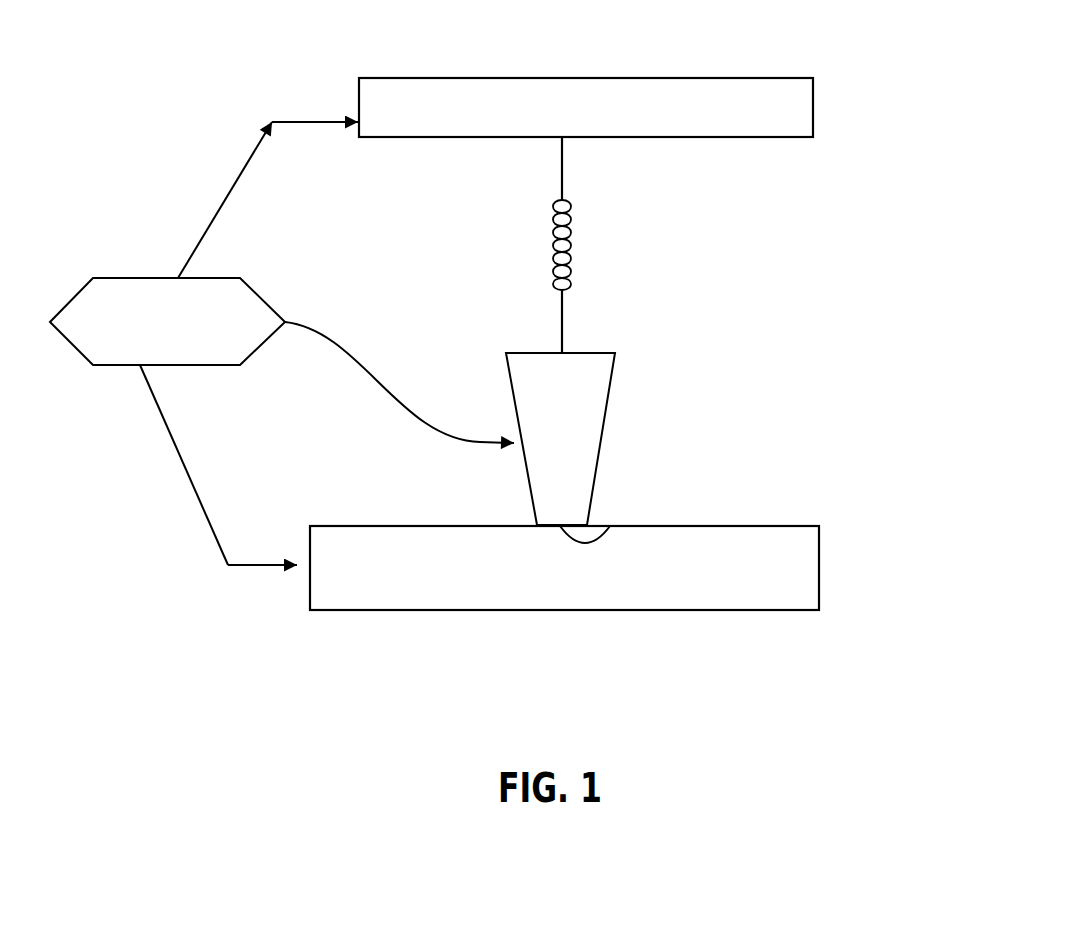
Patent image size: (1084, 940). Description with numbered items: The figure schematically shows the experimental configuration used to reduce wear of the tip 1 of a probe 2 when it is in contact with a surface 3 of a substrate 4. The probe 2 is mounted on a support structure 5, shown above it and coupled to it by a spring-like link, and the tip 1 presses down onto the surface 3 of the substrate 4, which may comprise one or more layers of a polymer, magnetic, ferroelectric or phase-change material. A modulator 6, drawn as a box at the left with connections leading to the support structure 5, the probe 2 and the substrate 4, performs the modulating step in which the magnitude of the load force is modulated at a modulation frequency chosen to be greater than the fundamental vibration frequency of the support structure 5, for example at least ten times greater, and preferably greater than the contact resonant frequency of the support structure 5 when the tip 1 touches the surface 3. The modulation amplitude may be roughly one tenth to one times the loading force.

The tip 1 is at (607, 526).
The probe 2 is at (602, 371).
The surface 3 is at (789, 526).
The substrate 4 is at (805, 565).
The support structure 5 is at (727, 87).
The modulator 6 is at (133, 278).